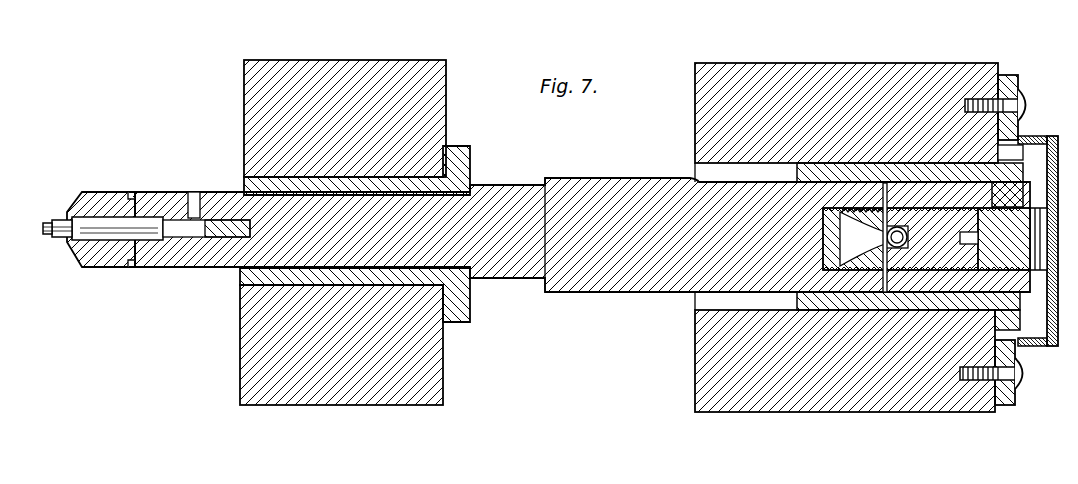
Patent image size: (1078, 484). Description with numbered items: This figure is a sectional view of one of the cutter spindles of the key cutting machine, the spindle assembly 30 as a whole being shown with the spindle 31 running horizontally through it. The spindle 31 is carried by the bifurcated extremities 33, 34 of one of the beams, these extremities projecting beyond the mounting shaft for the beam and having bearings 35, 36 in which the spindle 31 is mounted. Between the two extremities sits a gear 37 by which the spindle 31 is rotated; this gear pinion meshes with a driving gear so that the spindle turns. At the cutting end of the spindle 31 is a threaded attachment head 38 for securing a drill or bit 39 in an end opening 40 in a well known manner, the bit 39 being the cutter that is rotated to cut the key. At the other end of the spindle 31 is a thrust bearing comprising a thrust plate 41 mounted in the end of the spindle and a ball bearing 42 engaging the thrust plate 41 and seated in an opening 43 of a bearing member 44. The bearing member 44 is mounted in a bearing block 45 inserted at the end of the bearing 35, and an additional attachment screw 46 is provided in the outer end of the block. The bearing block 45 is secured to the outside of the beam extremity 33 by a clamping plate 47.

The device 30 is at (674, 6).
The spindle 31 is at (510, 198).
The bifurcated extremity 33 is at (740, 77).
The bifurcated extremity 34 is at (317, 68).
The bearing 35 is at (828, 165).
The bearing 36 is at (258, 183).
The gear 37 is at (608, 178).
The threaded attachment head 38 is at (107, 262).
The drill or bit 39 is at (55, 238).
The end opening 40 is at (147, 217).
The thrust plate 41 is at (823, 243).
The ball bearing 42 is at (899, 230).
The opening 43 is at (905, 227).
The bearing member 44 is at (937, 252).
The bearing block 45 is at (983, 200).
The attachment screw 46 is at (1019, 255).
The clamping plate 47 is at (1055, 137).